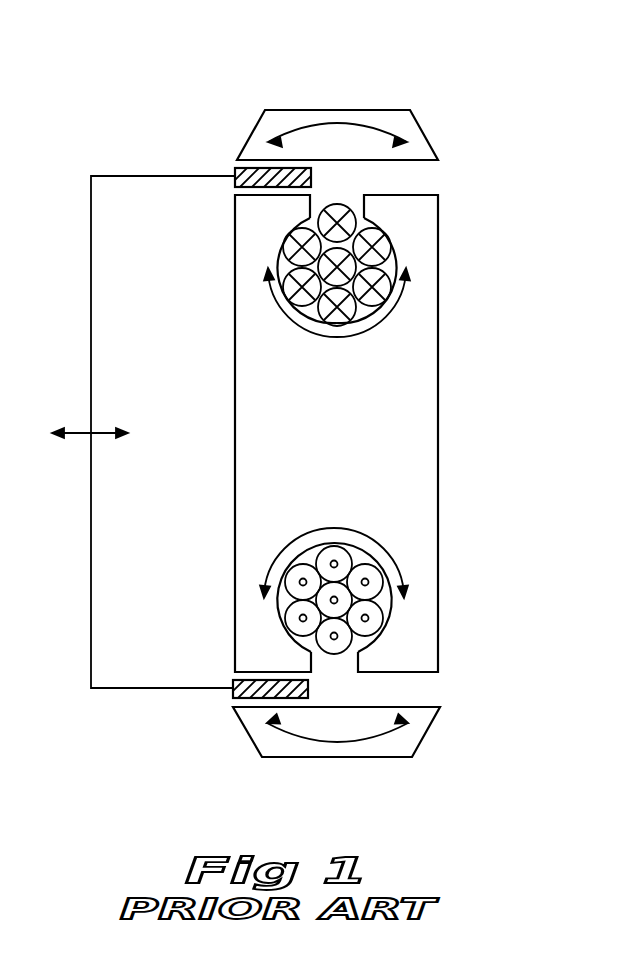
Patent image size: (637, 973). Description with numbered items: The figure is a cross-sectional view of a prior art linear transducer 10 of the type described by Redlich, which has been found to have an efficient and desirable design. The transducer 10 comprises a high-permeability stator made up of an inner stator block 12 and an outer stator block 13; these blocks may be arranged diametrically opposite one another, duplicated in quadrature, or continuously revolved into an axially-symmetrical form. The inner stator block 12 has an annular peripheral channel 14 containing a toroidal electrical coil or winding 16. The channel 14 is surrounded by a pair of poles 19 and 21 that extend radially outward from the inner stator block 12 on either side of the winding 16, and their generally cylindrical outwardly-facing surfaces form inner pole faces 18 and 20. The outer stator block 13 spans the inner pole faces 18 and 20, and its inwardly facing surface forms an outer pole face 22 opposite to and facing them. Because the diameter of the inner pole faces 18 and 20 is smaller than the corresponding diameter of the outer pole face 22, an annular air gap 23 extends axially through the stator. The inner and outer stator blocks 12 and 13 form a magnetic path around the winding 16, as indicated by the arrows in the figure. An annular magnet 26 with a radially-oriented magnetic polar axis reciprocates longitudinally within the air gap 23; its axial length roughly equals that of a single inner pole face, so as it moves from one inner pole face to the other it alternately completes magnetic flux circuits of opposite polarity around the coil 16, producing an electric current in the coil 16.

The linear transducer 10 is at (352, 88).
The inner stator block 12 is at (328, 433).
The outer stator block 13 is at (253, 130).
The annular peripheral channel 14 is at (363, 545).
The toroidal electrical coil 16 is at (352, 309).
The inner pole face 18 is at (310, 197).
The pole 19 is at (258, 247).
The inner pole face 20 is at (417, 198).
The pole 21 is at (415, 250).
The outer pole face 22 is at (335, 160).
The annular air gap 23 is at (454, 174).
The annular magnet 26 is at (235, 170).